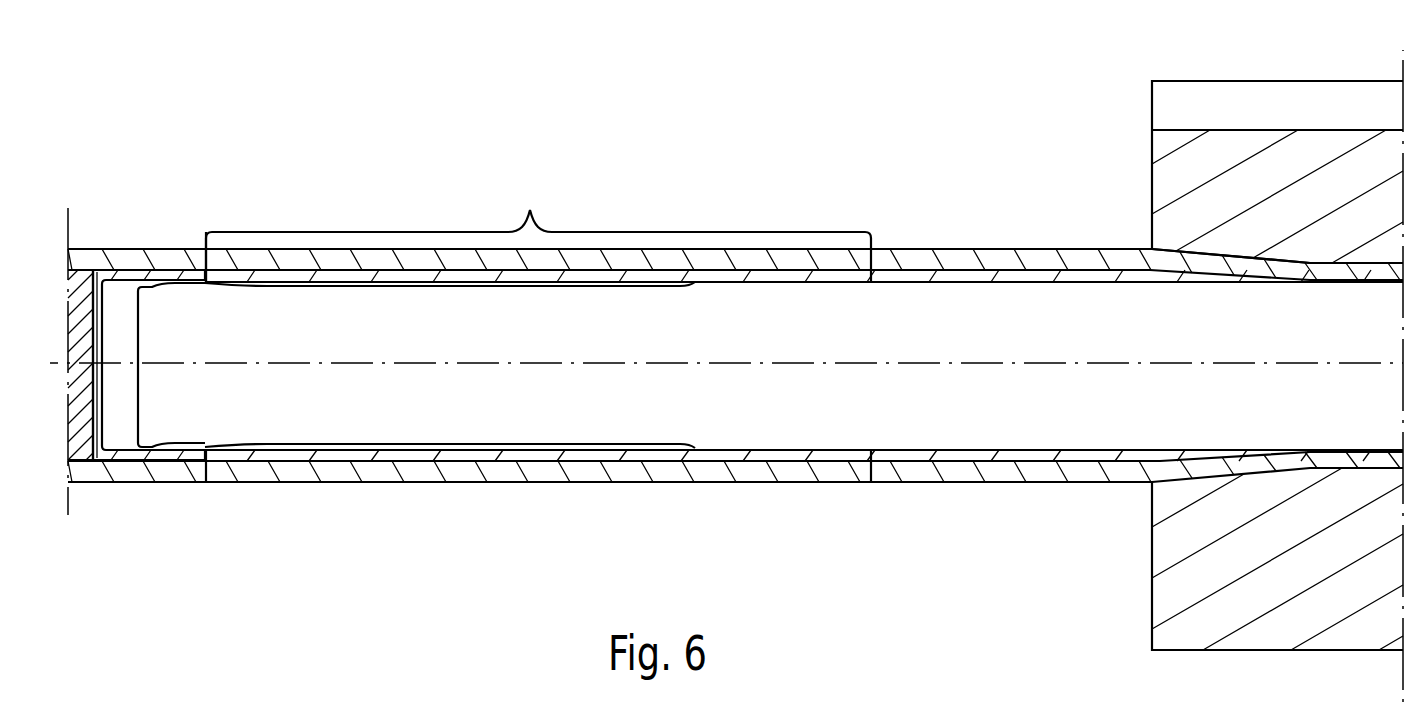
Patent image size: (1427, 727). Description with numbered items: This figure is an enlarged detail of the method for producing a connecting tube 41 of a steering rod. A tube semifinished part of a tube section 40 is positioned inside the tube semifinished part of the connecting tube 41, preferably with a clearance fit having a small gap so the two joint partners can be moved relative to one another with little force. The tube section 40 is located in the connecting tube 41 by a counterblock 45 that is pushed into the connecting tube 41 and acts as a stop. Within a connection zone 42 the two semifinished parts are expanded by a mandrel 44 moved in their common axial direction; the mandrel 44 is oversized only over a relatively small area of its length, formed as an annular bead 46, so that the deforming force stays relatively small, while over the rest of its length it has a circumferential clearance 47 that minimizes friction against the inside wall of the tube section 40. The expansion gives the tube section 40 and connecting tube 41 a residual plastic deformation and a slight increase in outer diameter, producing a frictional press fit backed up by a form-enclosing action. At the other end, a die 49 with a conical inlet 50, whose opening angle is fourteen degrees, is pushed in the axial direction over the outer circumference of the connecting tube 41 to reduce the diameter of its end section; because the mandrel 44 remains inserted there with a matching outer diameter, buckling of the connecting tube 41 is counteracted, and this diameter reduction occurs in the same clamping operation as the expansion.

The tube section 40 is at (610, 455).
The connecting tube 41 is at (166, 258).
The connection zone 42 is at (538, 225).
The mandrel 44 is at (160, 432).
The counterblock 45 is at (78, 323).
The annular bead 46 is at (240, 443).
The circumferential clearance 47 is at (377, 447).
The die 49 is at (1135, 99).
The conical inlet 50 is at (1223, 253).